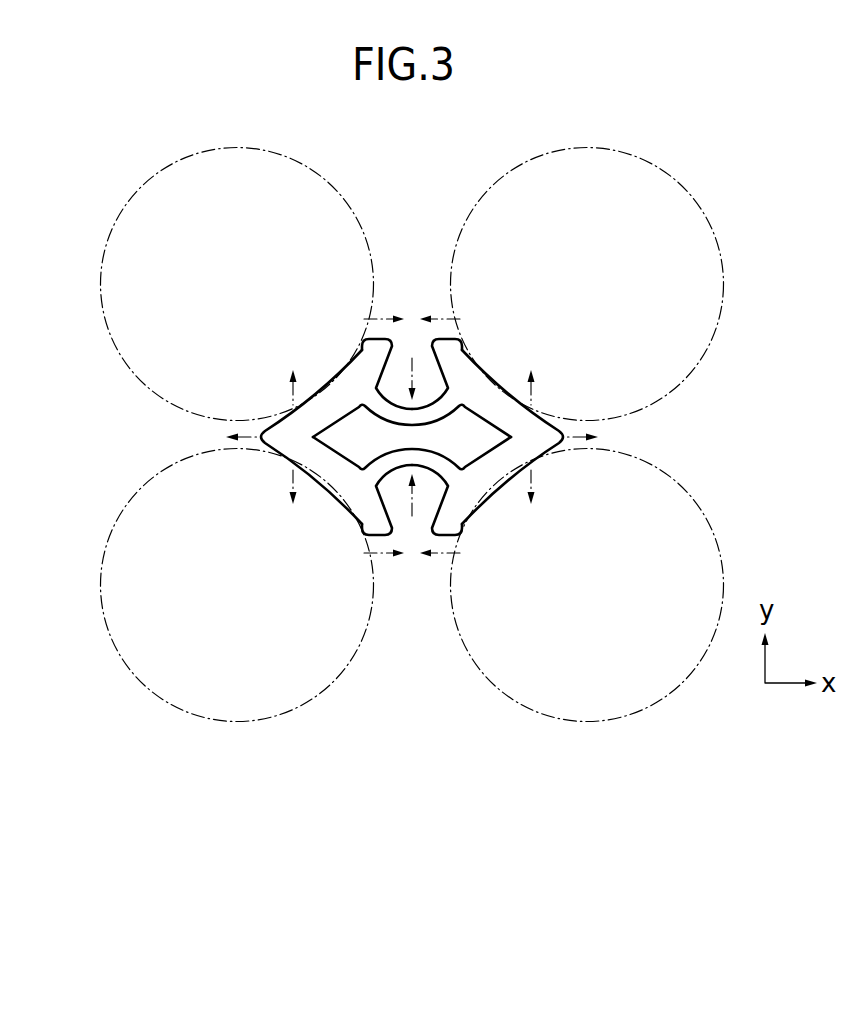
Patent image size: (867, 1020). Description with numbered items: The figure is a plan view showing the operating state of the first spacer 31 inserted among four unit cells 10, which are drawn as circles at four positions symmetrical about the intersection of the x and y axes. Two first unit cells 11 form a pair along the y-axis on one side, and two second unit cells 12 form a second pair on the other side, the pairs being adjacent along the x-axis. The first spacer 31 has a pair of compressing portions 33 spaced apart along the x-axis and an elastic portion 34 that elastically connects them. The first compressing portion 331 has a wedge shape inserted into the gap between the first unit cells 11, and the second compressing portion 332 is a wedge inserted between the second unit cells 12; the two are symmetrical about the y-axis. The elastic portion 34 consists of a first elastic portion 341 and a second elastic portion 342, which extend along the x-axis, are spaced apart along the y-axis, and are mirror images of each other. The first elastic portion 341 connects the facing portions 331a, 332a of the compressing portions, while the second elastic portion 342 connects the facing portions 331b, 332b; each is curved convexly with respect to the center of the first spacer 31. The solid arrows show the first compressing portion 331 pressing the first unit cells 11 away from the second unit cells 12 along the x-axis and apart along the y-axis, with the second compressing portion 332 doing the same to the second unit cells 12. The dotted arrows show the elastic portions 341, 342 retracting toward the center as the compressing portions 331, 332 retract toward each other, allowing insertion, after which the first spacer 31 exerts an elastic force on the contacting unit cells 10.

The unit cell 10 is at (448, 422).
The first unit cell 11 is at (142, 385).
The second unit cell 12 is at (682, 385).
The first spacer 31 is at (410, 294).
The compressing portion 33 is at (549, 437).
The first compressing portion 331 is at (549, 437).
The portion of the first compressing portion 331a is at (372, 350).
The portion of the first compressing portion 331b is at (372, 528).
The second compressing portion 332 is at (624, 437).
The portion of the second compressing portion 332a is at (445, 350).
The portion of the second compressing portion 332b is at (446, 528).
The elastic portion 34 is at (575, 417).
The first elastic portion 341 is at (420, 411).
The second elastic portion 342 is at (440, 463).